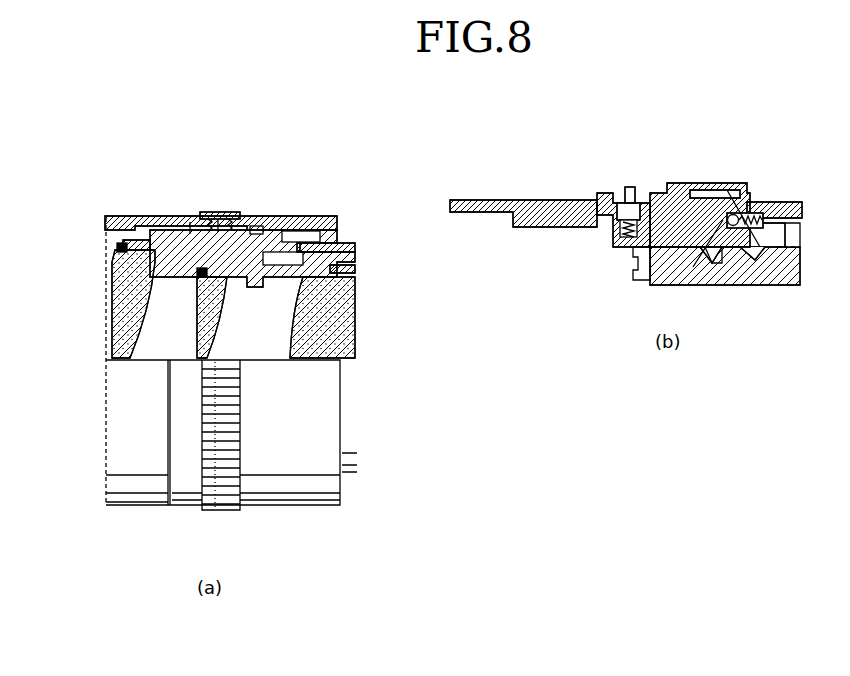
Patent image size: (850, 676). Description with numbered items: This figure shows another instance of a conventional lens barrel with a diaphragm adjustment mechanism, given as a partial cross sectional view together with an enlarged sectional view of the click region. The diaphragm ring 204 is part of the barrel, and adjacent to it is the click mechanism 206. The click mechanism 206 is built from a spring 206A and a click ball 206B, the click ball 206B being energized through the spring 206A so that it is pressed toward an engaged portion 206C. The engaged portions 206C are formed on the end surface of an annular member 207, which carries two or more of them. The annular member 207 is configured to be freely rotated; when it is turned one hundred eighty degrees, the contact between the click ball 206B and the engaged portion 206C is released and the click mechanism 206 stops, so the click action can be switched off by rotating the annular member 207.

The diaphragm ring 204 is at (295, 216).
The click mechanism 206 is at (723, 178).
The spring 206A is at (770, 258).
The click ball 206B is at (745, 262).
The engaged portion 206C is at (718, 263).
The annular member 207 is at (158, 215).